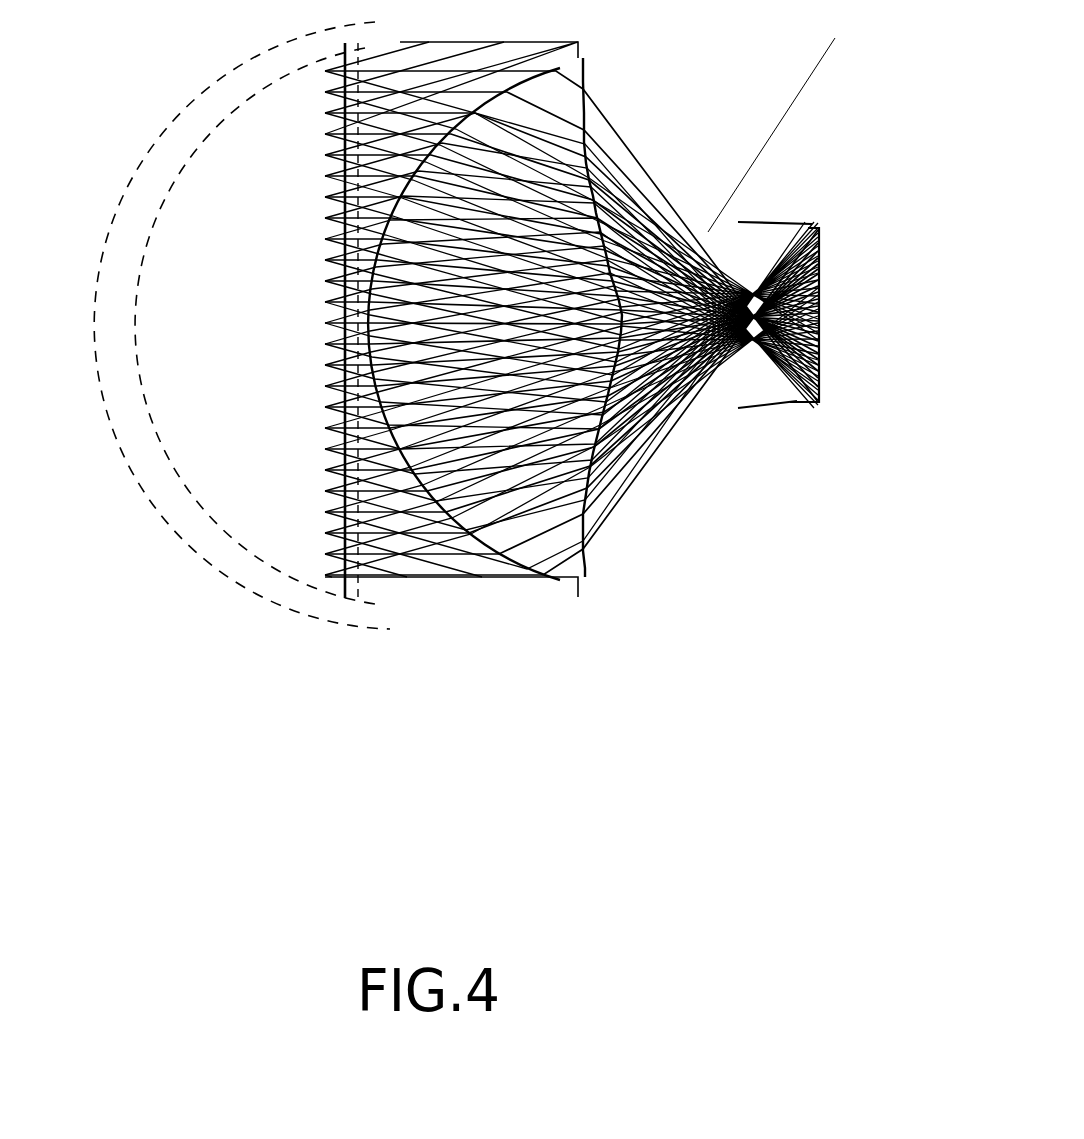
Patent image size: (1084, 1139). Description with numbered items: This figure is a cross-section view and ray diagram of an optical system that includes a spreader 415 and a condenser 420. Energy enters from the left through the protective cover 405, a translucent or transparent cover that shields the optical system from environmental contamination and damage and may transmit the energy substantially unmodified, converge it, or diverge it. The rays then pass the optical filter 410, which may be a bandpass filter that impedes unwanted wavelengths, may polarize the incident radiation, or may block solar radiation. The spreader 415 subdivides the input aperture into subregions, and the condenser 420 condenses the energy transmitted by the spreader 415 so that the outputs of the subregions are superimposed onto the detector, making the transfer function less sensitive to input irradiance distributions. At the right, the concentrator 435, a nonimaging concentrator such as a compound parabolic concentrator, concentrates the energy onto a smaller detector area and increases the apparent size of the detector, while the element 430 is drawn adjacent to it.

The protective cover 405 is at (117, 458).
The optical filter 410 is at (328, 520).
The spreader 415 is at (373, 546).
The condenser 420 is at (568, 439).
The detector 430 is at (837, 288).
The concentrator 435 is at (795, 424).